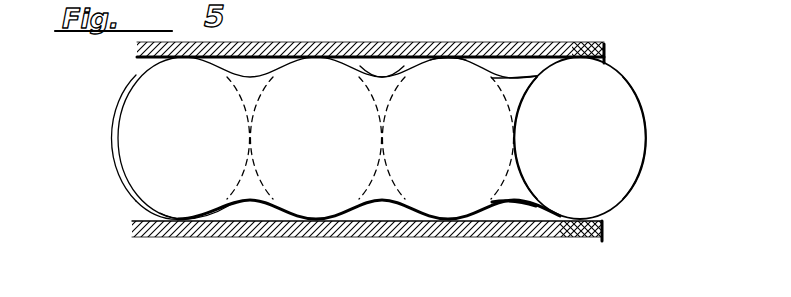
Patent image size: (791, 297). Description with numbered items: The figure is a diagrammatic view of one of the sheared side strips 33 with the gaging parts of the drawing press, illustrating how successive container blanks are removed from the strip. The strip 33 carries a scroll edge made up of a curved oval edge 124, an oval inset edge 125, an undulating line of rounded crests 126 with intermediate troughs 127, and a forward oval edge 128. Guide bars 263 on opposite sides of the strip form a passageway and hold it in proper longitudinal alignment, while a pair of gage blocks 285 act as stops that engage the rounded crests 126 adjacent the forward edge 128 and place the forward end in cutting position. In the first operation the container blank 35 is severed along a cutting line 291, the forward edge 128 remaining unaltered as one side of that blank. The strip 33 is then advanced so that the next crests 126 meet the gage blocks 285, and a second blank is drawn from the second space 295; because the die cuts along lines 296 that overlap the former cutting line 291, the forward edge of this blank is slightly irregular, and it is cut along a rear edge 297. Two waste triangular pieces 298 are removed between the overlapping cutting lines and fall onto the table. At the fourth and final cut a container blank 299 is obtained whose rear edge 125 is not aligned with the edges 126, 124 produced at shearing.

The side strip 33 is at (145, 109).
The container blank 35 is at (628, 106).
The curved oval edge 124 is at (147, 205).
The oval inset edge 125 is at (119, 141).
The crests 126 is at (165, 59).
The troughs 127 is at (378, 80).
The oval edge 128 is at (646, 152).
The guide bars 263 is at (380, 47).
The gage blocks 285 is at (592, 46).
The cutting line 291 is at (515, 146).
The second space 295 is at (454, 68).
The cutting lines 296 is at (503, 97).
The rear edge 297 is at (383, 146).
The waste triangular pieces 298 is at (527, 95).
The container blank 299 is at (182, 205).